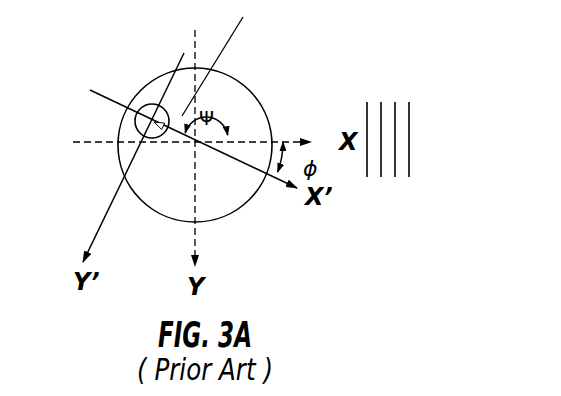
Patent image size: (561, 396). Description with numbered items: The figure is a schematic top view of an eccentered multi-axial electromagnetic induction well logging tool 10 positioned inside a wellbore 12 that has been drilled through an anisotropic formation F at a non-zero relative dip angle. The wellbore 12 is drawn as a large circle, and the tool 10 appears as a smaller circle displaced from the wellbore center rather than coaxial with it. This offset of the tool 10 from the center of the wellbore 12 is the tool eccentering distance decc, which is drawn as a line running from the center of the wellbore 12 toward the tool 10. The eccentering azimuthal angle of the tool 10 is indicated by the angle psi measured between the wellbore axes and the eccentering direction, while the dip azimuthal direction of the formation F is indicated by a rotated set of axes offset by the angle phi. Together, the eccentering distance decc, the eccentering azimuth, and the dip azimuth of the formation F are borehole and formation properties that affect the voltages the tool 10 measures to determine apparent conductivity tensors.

The tri-axial tool 10 is at (109, 79).
The wellbore 12 is at (218, 184).
The tool eccentering distance decc is at (249, 60).
The anisotropic formation F is at (306, 57).